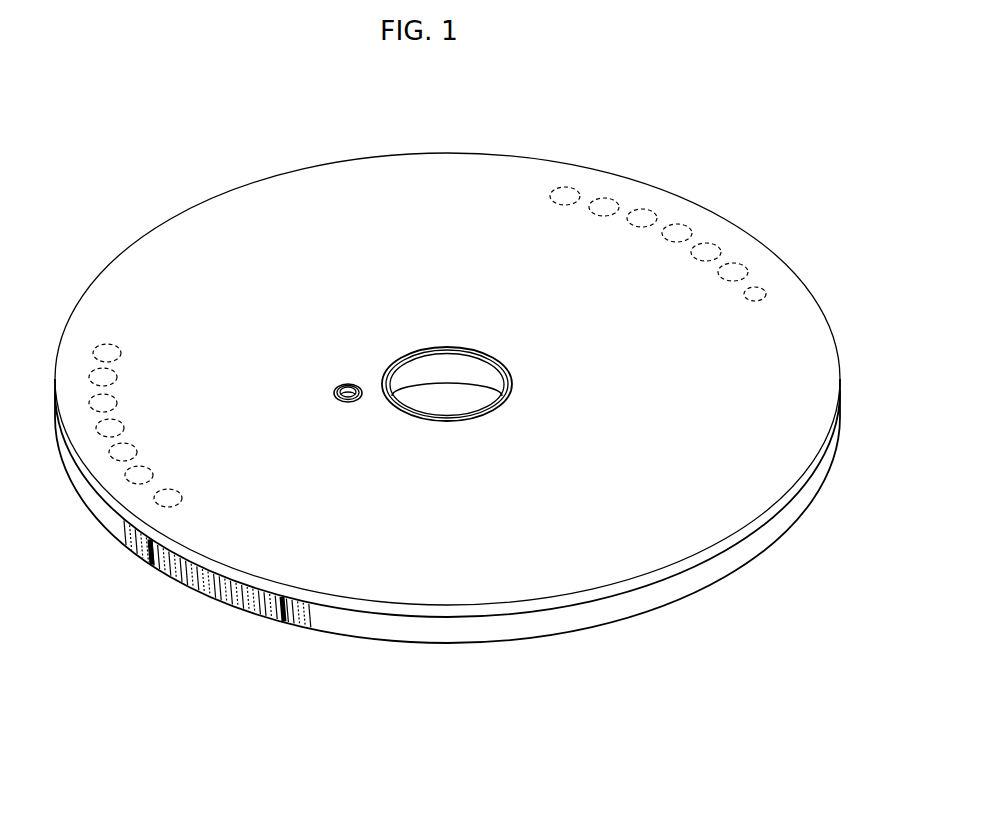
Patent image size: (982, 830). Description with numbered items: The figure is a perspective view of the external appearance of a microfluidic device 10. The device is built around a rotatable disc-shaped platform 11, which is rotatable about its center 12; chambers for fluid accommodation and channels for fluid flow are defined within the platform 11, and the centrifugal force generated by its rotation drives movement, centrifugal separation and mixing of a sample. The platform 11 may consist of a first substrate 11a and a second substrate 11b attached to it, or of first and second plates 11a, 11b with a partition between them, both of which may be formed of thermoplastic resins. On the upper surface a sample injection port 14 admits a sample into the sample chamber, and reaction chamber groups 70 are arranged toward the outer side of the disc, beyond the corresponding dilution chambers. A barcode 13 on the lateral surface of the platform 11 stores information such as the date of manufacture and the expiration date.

The microfluidic device 10 is at (437, 85).
The platform 11 is at (447, 440).
The first substrate 11a is at (638, 582).
The second substrate 11b is at (708, 673).
The center 12 is at (440, 397).
The barcode 13 is at (200, 586).
The sample injection port 14 is at (345, 386).
The reaction chamber groups 70 is at (531, 212).